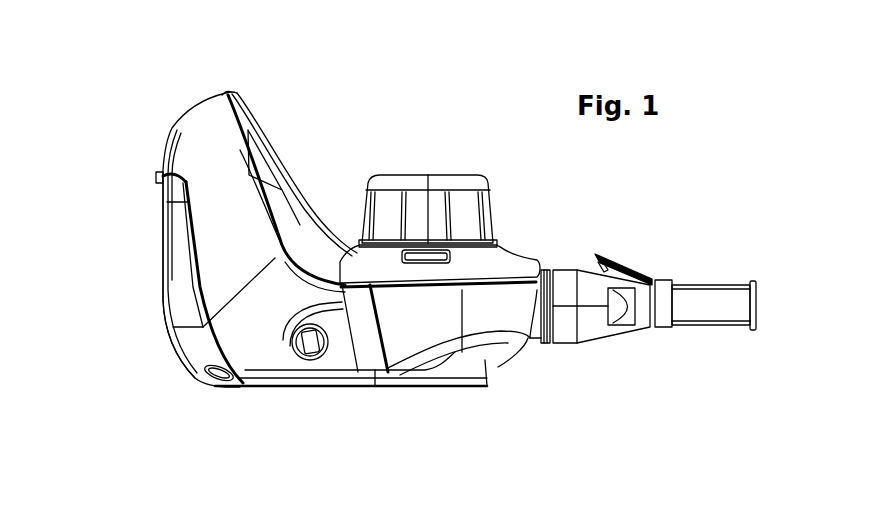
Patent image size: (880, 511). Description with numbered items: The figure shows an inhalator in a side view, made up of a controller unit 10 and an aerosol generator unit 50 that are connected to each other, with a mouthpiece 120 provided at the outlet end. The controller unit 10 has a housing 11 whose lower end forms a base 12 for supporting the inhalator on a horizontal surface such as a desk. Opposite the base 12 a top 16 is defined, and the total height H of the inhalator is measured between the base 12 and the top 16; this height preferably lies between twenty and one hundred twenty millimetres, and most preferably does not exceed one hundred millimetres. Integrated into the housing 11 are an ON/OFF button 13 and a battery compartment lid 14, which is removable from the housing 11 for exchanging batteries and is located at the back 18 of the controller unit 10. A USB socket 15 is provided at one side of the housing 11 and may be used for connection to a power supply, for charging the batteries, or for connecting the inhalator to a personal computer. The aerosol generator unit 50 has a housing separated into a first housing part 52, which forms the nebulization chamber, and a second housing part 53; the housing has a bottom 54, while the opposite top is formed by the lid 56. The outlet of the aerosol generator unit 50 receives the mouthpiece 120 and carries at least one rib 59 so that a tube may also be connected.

The controller unit 10 is at (282, 108).
The housing 11 is at (228, 245).
The base 12 is at (281, 394).
The ON/OFF button 13 is at (270, 148).
The battery compartment lid 14 is at (180, 297).
The USB socket 15 is at (322, 352).
The top 16 is at (228, 89).
The back 18 is at (164, 341).
The aerosol generator unit 50 is at (466, 114).
The first housing part 52 is at (498, 367).
The second housing part 53 is at (494, 257).
The bottom 54 is at (441, 394).
The lid 56 is at (458, 182).
The rib 59 is at (547, 345).
The mouthpiece 120 is at (692, 241).
The total height H is at (215, 388).